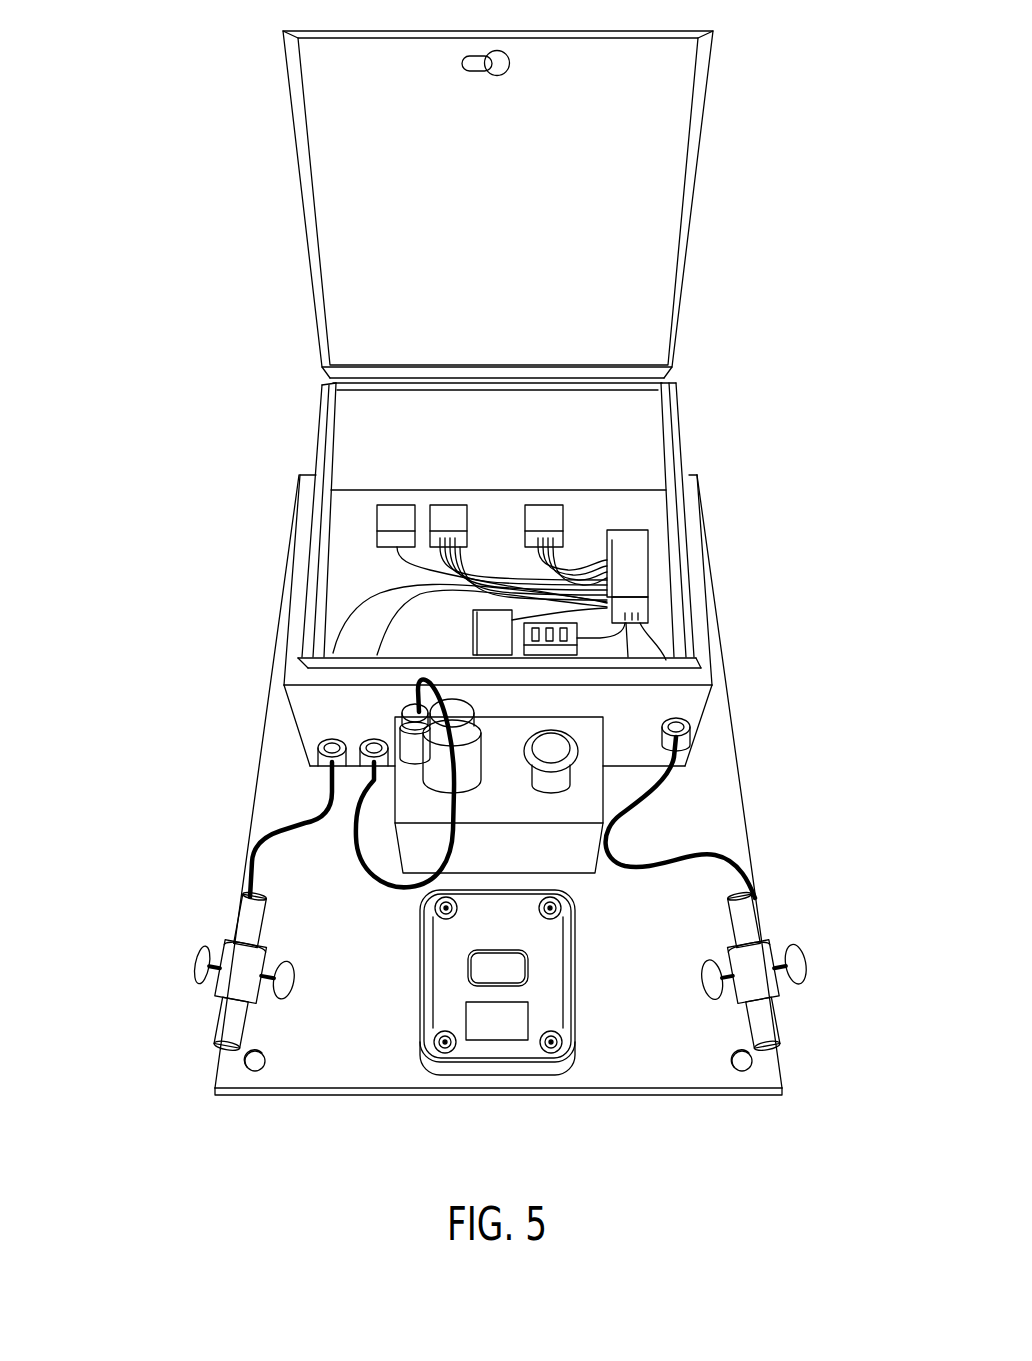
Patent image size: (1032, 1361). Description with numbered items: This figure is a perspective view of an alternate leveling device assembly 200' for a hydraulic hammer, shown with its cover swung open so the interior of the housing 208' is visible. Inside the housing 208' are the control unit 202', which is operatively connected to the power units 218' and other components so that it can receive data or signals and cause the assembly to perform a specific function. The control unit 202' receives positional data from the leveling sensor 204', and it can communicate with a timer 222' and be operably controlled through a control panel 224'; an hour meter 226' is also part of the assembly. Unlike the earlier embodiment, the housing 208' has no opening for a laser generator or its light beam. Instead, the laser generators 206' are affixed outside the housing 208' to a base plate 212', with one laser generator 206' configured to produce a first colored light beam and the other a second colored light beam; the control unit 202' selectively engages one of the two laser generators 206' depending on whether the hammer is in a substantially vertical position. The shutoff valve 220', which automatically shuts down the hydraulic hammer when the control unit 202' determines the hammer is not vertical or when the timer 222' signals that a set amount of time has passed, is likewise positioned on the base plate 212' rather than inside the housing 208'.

The leveling device assembly 200' is at (477, 613).
The control unit 202' is at (581, 595).
The leveling sensor 204' is at (353, 685).
The laser generator 206' is at (500, 869).
The housing 208' is at (442, 398).
The base plate 212' is at (544, 785).
The power unit 218' is at (610, 469).
The shutoff valve 220' is at (507, 931).
The timer 222' is at (394, 460).
The control panel 224' is at (684, 665).
The hour meter 226' is at (447, 1042).